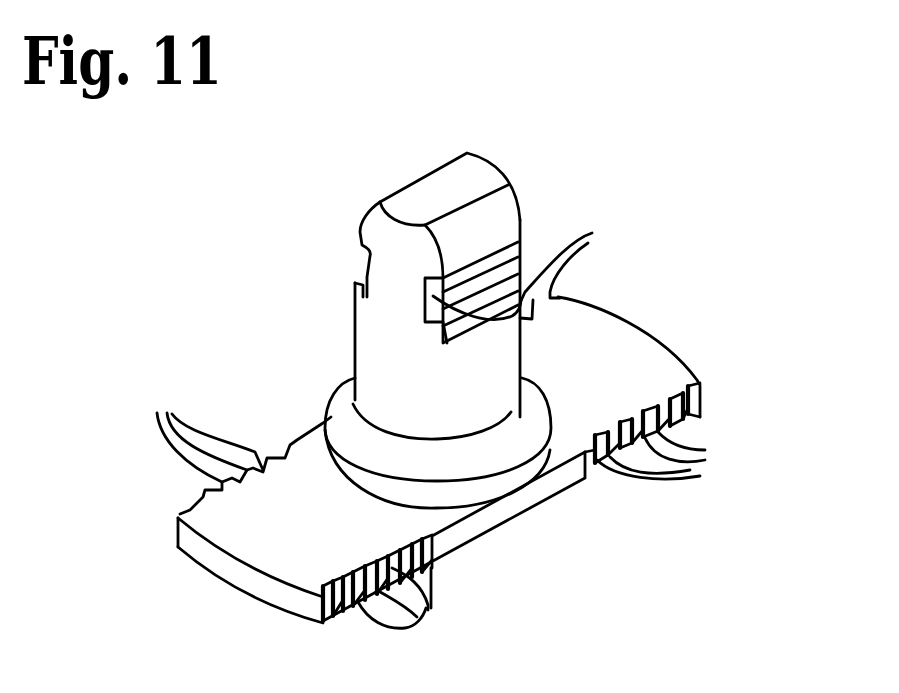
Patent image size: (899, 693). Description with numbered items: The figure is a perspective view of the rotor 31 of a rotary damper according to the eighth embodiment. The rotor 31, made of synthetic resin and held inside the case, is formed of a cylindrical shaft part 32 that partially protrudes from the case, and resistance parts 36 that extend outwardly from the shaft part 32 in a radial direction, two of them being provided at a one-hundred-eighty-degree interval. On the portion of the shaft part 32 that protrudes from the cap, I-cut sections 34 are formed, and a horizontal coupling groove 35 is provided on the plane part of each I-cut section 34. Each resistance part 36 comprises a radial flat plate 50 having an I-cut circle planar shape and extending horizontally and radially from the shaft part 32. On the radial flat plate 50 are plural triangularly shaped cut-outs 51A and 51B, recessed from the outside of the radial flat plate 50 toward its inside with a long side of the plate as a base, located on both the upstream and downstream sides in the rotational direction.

The rotor 31 is at (488, 547).
The shaft part 32 is at (437, 193).
The I-cut section 34 is at (443, 292).
The horizontal coupling groove 35 is at (523, 268).
The resistance part 36 is at (441, 444).
The radial flat plate 50 is at (627, 353).
The cut-out 51A is at (436, 429).
The cut-out 51B is at (510, 425).